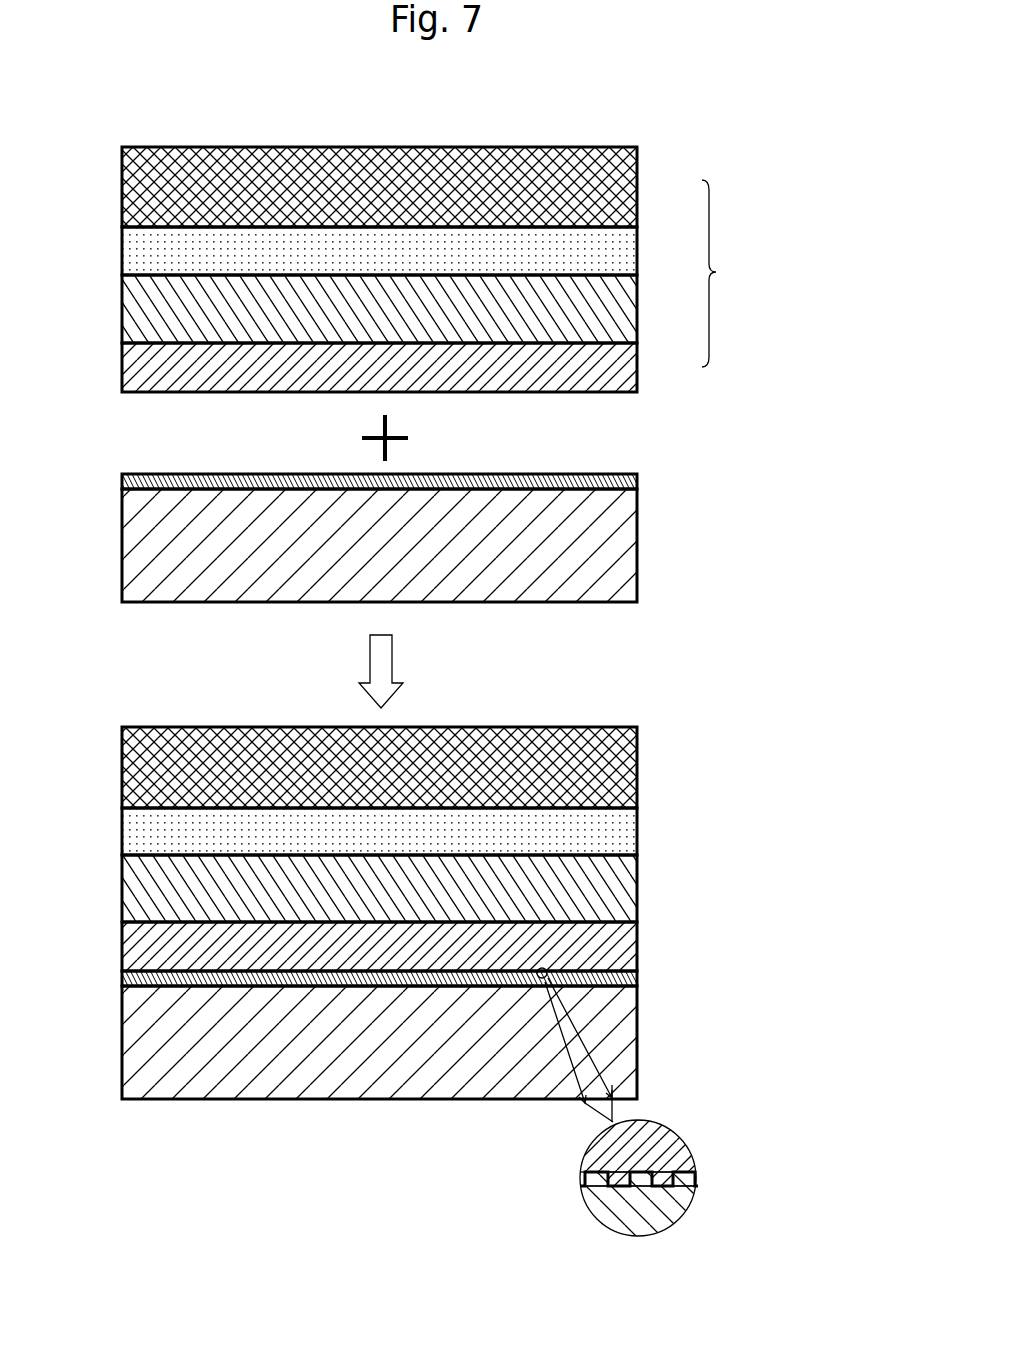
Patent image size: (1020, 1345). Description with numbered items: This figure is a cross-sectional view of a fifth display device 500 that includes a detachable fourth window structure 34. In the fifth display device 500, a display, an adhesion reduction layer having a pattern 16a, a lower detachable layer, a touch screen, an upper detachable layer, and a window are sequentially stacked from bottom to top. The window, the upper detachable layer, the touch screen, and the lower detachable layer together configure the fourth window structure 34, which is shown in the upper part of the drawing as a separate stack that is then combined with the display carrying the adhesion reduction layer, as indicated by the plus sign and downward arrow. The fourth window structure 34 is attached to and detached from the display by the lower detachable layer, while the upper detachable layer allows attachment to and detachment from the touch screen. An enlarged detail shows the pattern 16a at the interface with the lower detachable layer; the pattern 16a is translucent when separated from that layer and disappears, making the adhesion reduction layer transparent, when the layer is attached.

The fifth display device 500 is at (248, 109).
The fourth window structure 34 is at (729, 273).
The pattern 16a is at (690, 1170).